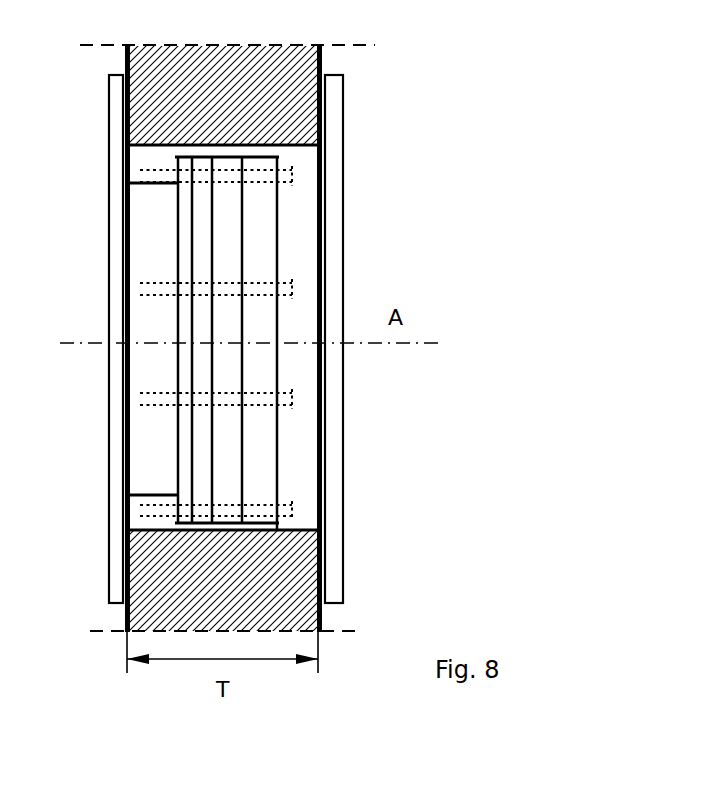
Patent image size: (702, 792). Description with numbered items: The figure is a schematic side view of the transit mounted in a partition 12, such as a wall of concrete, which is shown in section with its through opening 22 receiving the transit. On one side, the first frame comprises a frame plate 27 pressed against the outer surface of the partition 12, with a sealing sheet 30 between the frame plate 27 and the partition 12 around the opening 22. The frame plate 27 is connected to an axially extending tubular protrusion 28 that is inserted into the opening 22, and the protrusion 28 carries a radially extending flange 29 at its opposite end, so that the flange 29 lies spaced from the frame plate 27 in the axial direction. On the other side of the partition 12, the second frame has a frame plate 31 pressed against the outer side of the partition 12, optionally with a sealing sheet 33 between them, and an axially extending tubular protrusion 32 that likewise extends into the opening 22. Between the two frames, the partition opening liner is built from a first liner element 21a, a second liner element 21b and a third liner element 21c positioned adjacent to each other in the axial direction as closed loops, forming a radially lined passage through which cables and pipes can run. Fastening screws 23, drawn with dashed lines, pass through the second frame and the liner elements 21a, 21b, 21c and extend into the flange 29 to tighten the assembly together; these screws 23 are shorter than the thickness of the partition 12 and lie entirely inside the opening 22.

The partition 12 is at (303, 63).
The through opening 22 is at (160, 531).
The frame plate 27 is at (115, 133).
The tubular protrusion 28 is at (140, 243).
The flange 29 is at (183, 442).
The sealing sheet 30 is at (124, 176).
The frame plate 31 is at (333, 143).
The tubular protrusion 32 is at (307, 247).
The sealing sheet 33 is at (328, 193).
The fastening screws 23 is at (292, 400).
The first liner element 21a is at (197, 478).
The second liner element 21b is at (262, 448).
The third liner element 21c is at (228, 487).